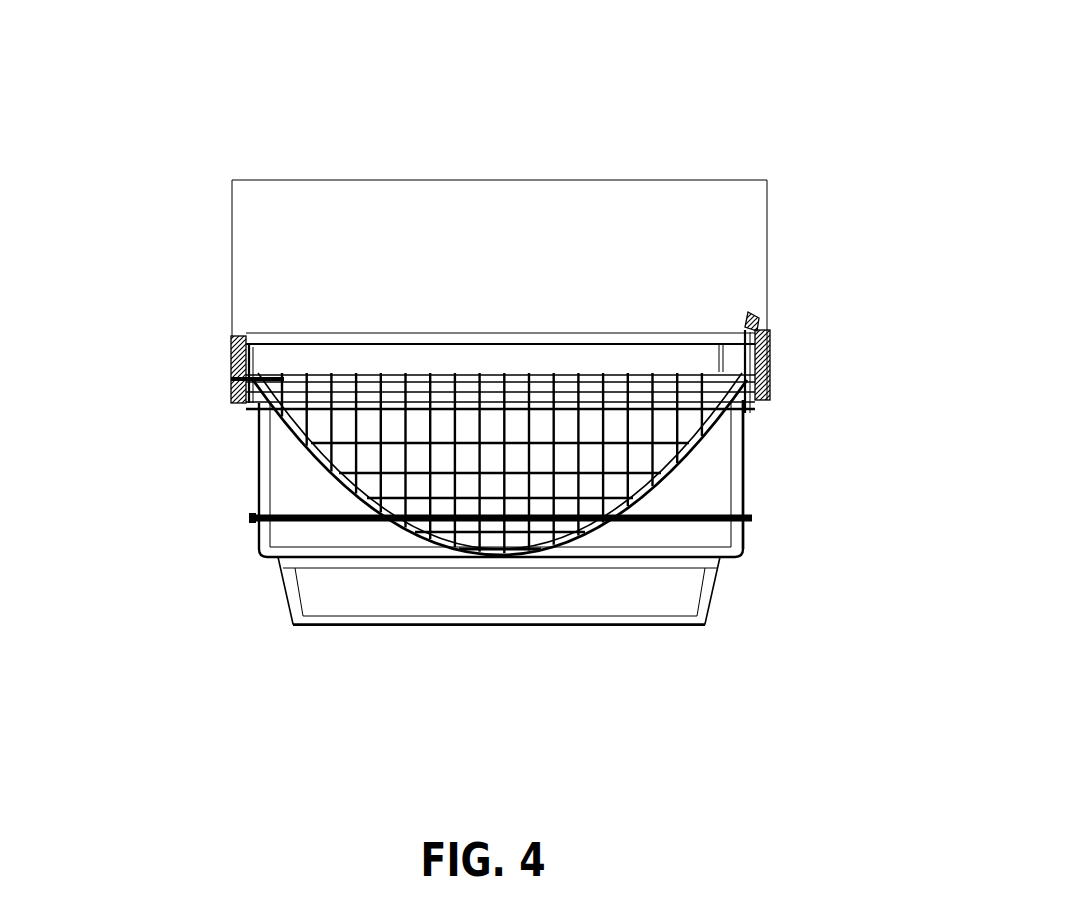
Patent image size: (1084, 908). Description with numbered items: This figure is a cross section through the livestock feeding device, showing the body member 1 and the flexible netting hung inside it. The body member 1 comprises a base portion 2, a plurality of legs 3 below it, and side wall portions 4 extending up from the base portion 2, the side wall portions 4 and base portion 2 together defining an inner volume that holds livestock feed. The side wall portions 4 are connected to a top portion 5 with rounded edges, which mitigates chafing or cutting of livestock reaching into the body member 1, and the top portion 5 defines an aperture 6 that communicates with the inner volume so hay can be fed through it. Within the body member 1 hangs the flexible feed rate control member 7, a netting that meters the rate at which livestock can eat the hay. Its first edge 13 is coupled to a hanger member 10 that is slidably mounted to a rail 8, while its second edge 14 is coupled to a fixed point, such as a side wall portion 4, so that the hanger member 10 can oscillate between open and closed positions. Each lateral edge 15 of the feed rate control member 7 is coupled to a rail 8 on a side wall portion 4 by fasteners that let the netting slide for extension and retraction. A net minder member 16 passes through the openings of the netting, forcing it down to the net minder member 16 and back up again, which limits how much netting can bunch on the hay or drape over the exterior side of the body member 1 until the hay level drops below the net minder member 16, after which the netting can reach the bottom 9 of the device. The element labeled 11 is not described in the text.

The body member 1 is at (257, 549).
The base portion 2 is at (710, 556).
The legs 3 is at (715, 589).
The side wall portions 4 is at (741, 452).
The top portion 5 is at (771, 353).
The aperture 6 is at (752, 329).
The flexible feed rate control member 7 is at (497, 432).
The rail 8 is at (537, 372).
The bottom 9 is at (667, 511).
The hanger member 10 is at (246, 380).
The net attachment band 11 is at (240, 378).
The first edge 13 is at (262, 405).
The second edge 14 is at (773, 332).
The lateral edge 15 is at (625, 373).
The net minder member 16 is at (253, 518).